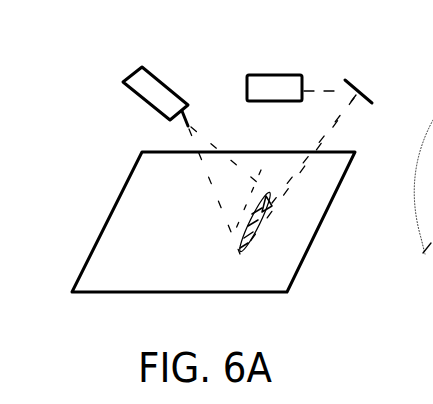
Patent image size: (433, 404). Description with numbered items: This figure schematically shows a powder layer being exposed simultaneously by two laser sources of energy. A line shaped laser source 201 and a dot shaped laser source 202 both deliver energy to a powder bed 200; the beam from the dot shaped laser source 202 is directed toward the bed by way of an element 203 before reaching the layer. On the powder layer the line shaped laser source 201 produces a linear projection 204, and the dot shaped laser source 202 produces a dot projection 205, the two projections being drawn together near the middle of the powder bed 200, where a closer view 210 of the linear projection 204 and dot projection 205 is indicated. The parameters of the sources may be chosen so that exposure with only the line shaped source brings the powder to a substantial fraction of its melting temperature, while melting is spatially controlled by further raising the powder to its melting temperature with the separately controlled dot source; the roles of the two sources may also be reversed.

The powder bed 200 is at (147, 184).
The line shaped laser source 201 is at (152, 88).
The dot shaped laser source 202 is at (270, 83).
The mirror 203 is at (362, 83).
The linear projection 204 is at (272, 218).
The dot projection 205 is at (277, 223).
The closer view 210 is at (280, 210).